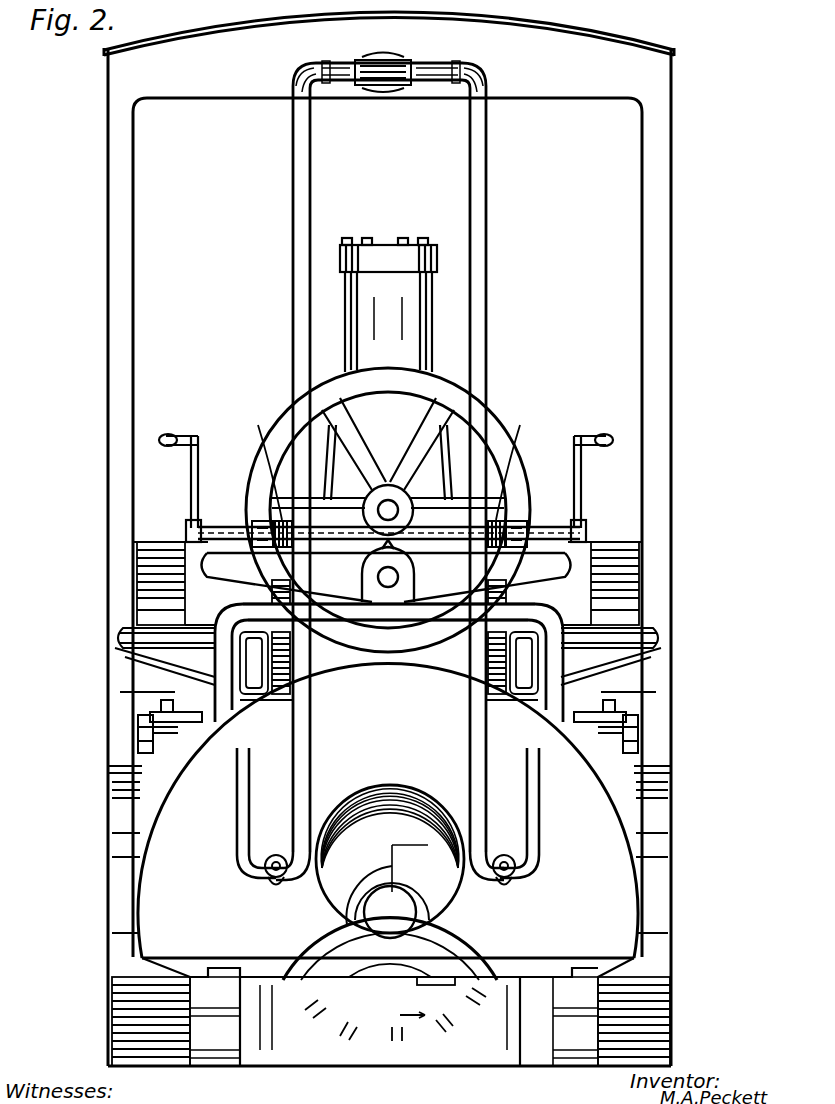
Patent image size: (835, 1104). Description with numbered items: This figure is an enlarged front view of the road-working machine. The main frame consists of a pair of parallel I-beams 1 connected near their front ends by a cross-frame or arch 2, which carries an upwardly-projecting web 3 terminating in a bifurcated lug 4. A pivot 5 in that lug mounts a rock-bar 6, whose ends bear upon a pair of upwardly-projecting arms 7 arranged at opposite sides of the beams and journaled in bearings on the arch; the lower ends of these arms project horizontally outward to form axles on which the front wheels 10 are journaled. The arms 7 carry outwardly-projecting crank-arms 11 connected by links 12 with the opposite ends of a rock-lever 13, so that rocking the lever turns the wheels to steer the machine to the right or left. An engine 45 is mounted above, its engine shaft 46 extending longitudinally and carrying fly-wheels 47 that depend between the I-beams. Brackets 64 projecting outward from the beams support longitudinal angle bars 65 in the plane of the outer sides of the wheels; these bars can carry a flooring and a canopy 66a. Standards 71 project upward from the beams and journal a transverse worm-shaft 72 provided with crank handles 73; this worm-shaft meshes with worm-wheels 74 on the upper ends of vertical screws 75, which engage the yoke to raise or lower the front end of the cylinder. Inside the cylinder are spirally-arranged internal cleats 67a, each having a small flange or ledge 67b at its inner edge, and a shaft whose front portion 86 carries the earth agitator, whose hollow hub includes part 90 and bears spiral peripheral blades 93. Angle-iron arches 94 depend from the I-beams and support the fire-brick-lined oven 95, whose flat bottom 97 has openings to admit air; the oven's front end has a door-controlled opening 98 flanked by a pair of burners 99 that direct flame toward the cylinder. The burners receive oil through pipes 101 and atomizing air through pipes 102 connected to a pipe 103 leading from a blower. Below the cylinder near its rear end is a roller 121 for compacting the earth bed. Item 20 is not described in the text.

The I-beams 1 is at (278, 705).
The cross-frame or arch 2 is at (293, 750).
The upwardly-projecting web 3 is at (388, 668).
The bifurcated lug 4 is at (370, 612).
The pivot 5 is at (392, 590).
The rock-bar 6 is at (386, 577).
The upwardly-projecting arms 7 is at (160, 606).
The front wheels 10 is at (125, 1005).
The crank-arms 11 is at (138, 747).
The links 12 is at (150, 728).
The rock-lever 13 is at (165, 712).
The guide block 20 is at (155, 560).
The engine 45 is at (388, 252).
The engine shaft 46 is at (388, 500).
The fly-wheels 47 is at (388, 510).
The brackets 64 is at (180, 672).
The longitudinal angle bars 65 is at (205, 644).
The canopy 66a is at (389, 60).
The internal cleats 67a is at (395, 1040).
The flange or ledge 67b is at (450, 1025).
The standards 71 is at (235, 560).
The worm-shaft 72 is at (220, 525).
The crank handles 73 is at (190, 436).
The worm-wheels 74 is at (391, 459).
The vertical screws 75 is at (285, 650).
The front shaft portion 86 is at (390, 912).
The hub part 90 is at (424, 918).
The peripheral blades 93 is at (452, 905).
The angle-iron arches 94 is at (389, 613).
The oven 95 is at (388, 839).
The flat bottom 97 is at (388, 1012).
The door-controlled opening 98 is at (388, 790).
The burners 99 is at (274, 884).
The oil pipes 101 is at (237, 830).
The air pipes 102 is at (300, 818).
The blower pipe 103 is at (385, 88).
The roller 121 is at (394, 1021).